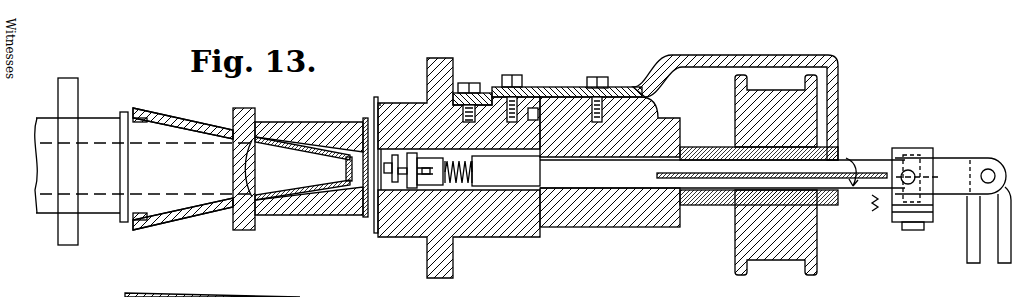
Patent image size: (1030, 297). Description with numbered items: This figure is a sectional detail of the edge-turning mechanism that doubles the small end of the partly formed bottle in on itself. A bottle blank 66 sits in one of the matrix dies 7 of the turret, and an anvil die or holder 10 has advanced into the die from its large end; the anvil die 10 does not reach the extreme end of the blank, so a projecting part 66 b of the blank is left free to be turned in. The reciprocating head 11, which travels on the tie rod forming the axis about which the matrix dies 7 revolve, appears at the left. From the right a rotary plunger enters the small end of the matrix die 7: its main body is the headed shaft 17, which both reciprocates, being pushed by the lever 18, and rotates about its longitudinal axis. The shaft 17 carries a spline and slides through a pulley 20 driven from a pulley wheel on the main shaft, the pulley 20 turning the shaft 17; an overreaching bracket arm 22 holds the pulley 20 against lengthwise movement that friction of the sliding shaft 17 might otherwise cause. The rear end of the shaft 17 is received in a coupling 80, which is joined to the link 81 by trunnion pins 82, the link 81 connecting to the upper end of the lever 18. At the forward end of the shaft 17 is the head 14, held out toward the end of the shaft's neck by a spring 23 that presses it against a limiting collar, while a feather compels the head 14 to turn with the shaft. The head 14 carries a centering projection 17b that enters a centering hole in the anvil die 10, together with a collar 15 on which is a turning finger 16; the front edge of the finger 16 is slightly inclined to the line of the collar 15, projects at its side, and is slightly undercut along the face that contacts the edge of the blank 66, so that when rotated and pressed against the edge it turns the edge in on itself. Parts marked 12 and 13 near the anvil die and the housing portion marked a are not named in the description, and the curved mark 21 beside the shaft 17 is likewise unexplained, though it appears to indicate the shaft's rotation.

The matrix die 7 is at (145, 113).
The anvil die or holder 10 is at (143, 167).
The reciprocating head 11 is at (78, 88).
The inner tapered tube 12 is at (346, 169).
The end plate 13 is at (370, 165).
The head 14 is at (428, 189).
The collar 15 is at (398, 189).
The turning finger 16 is at (376, 220).
The shaft 17 is at (722, 174).
The centering projection 17b is at (388, 150).
The lever 18 is at (970, 238).
The pulley 20 is at (817, 258).
The arrow 21 is at (815, 178).
The overreaching bracket arm 22 is at (672, 82).
The spring 23 is at (478, 173).
The blank 66 is at (174, 217).
The coupling 80 is at (913, 148).
The link 81 is at (953, 160).
The trunnion pins 82 is at (924, 177).
The lower block a is at (507, 232).
The projecting part b is at (384, 94).